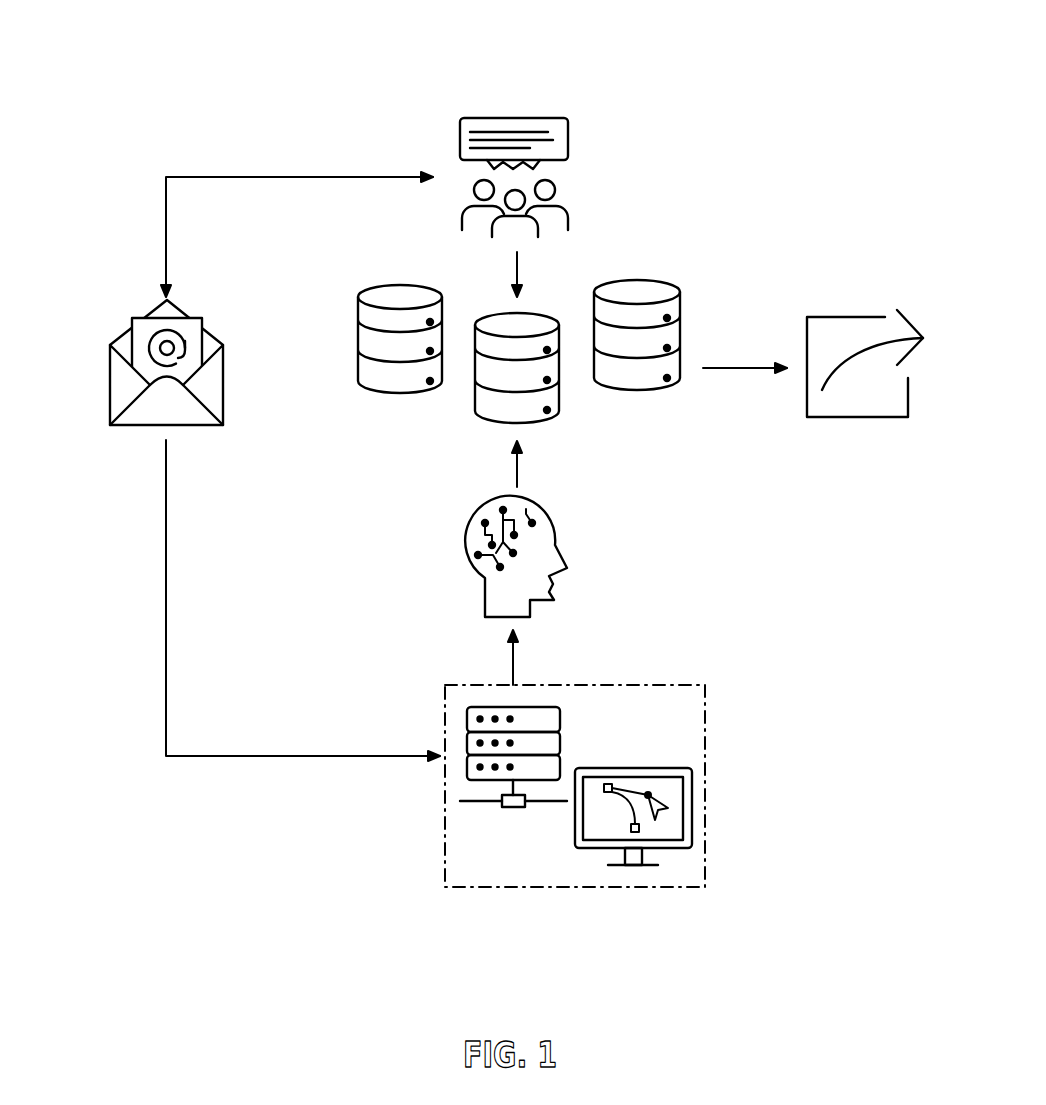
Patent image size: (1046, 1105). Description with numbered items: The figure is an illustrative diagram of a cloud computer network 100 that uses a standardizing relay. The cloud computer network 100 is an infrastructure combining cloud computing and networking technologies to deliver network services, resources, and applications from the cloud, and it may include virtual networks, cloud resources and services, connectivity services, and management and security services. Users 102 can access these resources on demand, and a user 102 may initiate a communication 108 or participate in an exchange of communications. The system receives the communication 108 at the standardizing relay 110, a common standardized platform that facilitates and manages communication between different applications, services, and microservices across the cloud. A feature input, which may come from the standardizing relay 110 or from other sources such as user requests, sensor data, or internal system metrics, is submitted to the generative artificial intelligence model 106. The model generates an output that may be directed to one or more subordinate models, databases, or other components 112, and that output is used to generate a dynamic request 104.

The cloud computer network 100 is at (532, 24).
The users 102 is at (563, 98).
The dynamic request 104 is at (866, 286).
The generative artificial intelligence model 106 is at (434, 561).
The communication 108 is at (114, 467).
The standardizing relay 110 is at (665, 662).
The components 112 is at (395, 429).